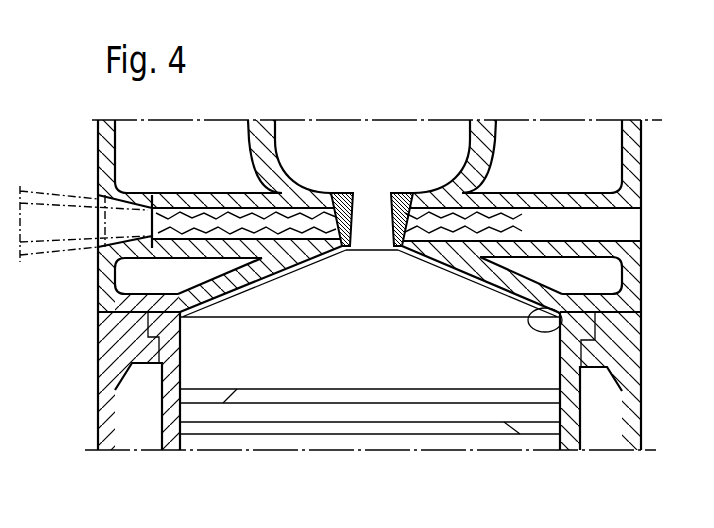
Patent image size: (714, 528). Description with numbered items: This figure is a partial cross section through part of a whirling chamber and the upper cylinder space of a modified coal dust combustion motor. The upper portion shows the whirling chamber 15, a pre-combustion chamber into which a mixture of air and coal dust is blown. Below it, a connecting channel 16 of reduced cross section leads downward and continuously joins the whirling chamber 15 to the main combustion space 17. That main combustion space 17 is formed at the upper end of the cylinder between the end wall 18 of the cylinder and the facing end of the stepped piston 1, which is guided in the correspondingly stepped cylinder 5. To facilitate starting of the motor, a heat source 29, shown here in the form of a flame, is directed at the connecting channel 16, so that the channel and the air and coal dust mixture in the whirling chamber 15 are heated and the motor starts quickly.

The stepped piston 1 is at (318, 360).
The stepped cylinder 5 is at (170, 394).
The whirling chamber 15 is at (426, 157).
The connecting channel 16 is at (378, 200).
The main combustion space 17 is at (562, 326).
The end wall 18 is at (503, 277).
The heat source 29 is at (108, 228).